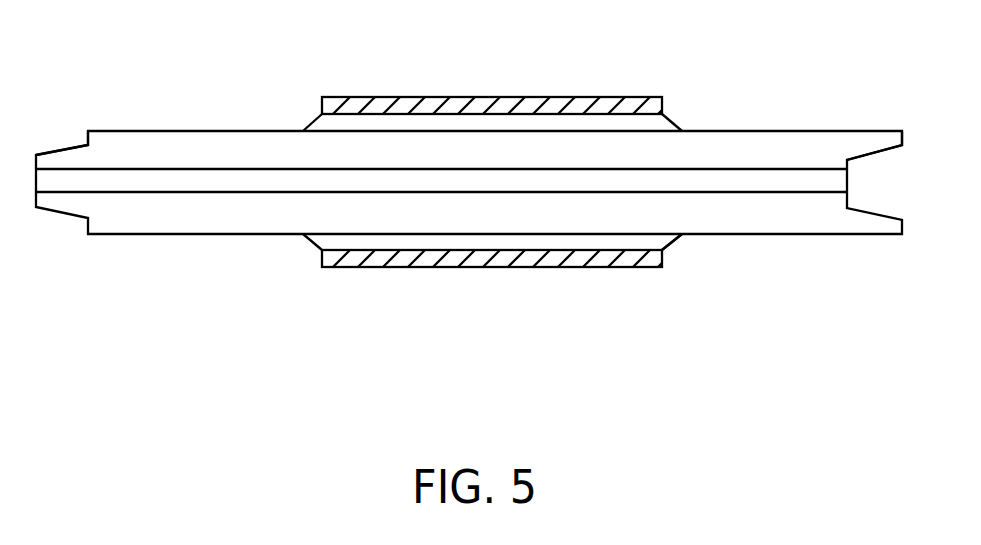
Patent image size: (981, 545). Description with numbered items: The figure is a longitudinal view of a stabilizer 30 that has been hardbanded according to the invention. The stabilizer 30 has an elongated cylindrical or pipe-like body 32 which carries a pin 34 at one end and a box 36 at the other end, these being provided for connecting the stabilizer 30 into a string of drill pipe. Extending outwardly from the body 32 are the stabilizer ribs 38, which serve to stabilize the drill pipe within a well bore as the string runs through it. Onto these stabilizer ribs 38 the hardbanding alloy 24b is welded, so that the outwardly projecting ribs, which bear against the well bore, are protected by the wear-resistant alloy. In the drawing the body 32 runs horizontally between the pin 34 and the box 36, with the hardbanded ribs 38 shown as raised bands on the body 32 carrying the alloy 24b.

The stabilizer 30 is at (469, 192).
The body 32 is at (202, 234).
The pin 34 is at (62, 147).
The box 36 is at (865, 131).
The stabilizer ribs 38 is at (677, 237).
The hardbanding alloy 24b is at (402, 267).